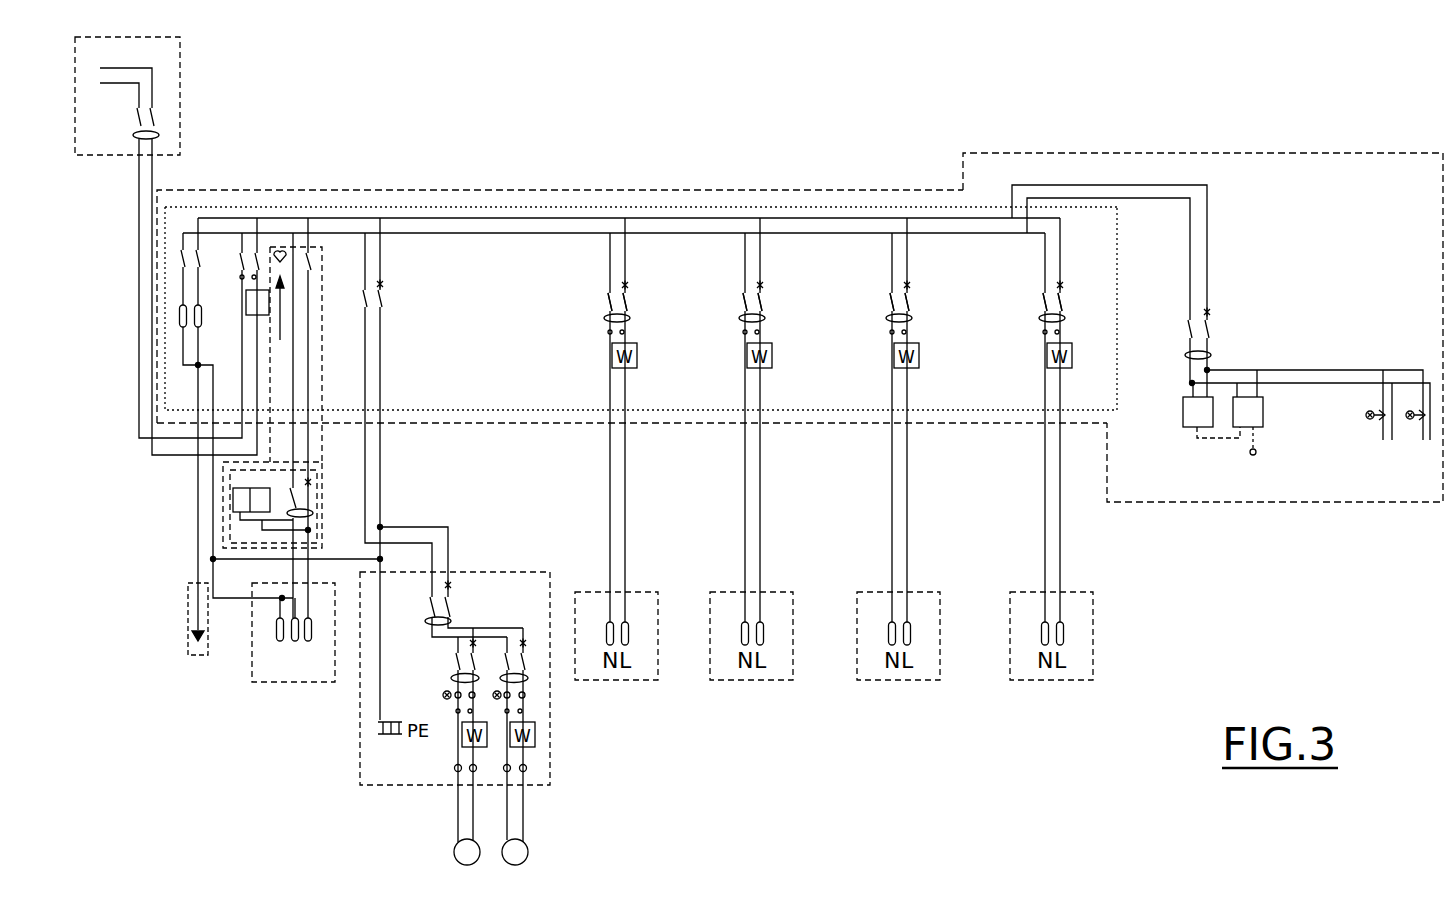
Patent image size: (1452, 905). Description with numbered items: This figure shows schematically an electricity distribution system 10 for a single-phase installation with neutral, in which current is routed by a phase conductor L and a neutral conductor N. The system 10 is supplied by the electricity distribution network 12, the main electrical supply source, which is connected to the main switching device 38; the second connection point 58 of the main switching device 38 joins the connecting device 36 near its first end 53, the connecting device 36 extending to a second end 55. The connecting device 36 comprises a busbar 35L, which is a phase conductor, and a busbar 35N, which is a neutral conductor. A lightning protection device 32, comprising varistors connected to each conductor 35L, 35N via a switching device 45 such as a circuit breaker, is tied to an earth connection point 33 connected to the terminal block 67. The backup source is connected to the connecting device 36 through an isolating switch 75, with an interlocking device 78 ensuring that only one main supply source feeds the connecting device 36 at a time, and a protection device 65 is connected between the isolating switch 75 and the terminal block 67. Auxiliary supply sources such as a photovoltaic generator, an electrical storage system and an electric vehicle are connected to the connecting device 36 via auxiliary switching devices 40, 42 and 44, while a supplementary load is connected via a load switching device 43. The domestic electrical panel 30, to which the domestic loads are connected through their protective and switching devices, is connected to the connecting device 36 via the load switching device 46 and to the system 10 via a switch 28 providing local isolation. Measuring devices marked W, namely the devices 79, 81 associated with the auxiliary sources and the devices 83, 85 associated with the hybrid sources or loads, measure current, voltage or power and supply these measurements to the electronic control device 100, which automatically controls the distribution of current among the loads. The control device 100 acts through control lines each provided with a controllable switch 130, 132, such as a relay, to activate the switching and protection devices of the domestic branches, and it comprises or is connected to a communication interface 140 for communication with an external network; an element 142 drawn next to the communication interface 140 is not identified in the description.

The electricity distribution system 10 is at (466, 205).
The electricity distribution network 12 is at (183, 75).
The switch 28 is at (454, 606).
The domestic electrical panel 30 is at (544, 569).
The lightning protection device 32 is at (168, 318).
The earth connection point 33 is at (197, 658).
The phase busbar 35L is at (562, 217).
The neutral busbar 35N is at (548, 238).
The connecting device 36 is at (685, 216).
The main switching device 38 is at (226, 261).
The auxiliary switching device 40 is at (1071, 296).
The auxiliary switching device 42 is at (918, 296).
The load switching device 43 is at (636, 296).
The auxiliary switching device 44 is at (771, 296).
The switching device 45 is at (182, 262).
The load switching device 46 is at (398, 293).
The first end 53 is at (160, 218).
The second end 55 is at (1108, 232).
The second connection point 58 is at (241, 204).
The protection device 65 is at (322, 486).
The terminal block 67 is at (263, 685).
The isolating switch 75 is at (315, 274).
The interlocking device 78 is at (287, 324).
The measuring device 79 is at (1072, 355).
The measuring device 81 is at (919, 355).
The measuring device 83 is at (772, 355).
The measuring device 85 is at (637, 355).
The electronic control device 100 is at (1183, 432).
The controllable switch 130 is at (1372, 430).
The controllable switch 132 is at (1413, 430).
The communication interface 140 is at (1264, 432).
The antenna 142 is at (1253, 464).